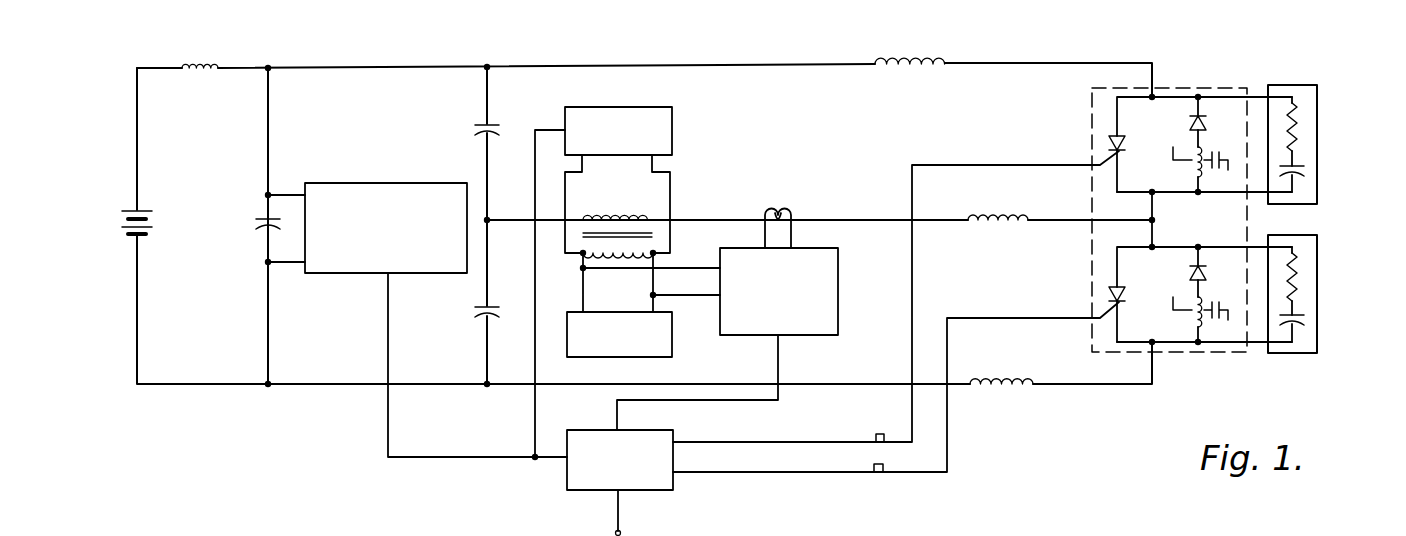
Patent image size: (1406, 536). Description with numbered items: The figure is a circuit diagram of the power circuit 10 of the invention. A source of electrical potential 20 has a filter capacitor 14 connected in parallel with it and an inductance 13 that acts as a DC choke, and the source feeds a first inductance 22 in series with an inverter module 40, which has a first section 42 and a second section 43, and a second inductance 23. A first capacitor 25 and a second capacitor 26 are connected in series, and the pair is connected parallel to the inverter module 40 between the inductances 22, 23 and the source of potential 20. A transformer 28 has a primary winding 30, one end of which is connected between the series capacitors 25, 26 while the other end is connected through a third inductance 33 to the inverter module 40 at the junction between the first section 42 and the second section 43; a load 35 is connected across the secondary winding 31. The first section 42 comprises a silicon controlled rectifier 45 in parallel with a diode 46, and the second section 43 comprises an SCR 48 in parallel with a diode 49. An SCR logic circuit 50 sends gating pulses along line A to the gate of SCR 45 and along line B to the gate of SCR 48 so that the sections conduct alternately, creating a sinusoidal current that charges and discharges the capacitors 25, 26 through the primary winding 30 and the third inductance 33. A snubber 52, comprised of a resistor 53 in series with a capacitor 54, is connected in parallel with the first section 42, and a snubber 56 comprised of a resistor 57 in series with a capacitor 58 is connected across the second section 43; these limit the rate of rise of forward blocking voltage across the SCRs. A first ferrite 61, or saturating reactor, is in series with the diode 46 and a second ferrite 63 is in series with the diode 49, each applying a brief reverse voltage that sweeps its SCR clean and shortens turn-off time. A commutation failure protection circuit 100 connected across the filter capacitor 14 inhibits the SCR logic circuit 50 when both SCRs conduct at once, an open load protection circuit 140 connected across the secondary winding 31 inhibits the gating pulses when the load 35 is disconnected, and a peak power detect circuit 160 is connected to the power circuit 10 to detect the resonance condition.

The power circuit 10 is at (1036, 392).
The inductance 13 is at (215, 60).
The filter capacitor 14 is at (262, 228).
The source of electrical potential 20 is at (128, 238).
The first inductance 22 is at (932, 56).
The second inductance 23 is at (1012, 394).
The first capacitor 25 is at (480, 126).
The second capacitor 26 is at (486, 316).
The transformer 28 is at (634, 228).
The primary winding 30 is at (608, 216).
The secondary winding 31 is at (626, 257).
The third inductance 33 is at (1000, 226).
The load 35 is at (664, 357).
The inverter module 40 is at (1256, 70).
The first section 42 is at (1156, 194).
The second section 43 is at (1178, 348).
The silicon controlled rectifier 45 is at (1108, 143).
The diode 46 is at (1190, 124).
The SCR 48 is at (1108, 297).
The diode 49 is at (1190, 274).
The SCR logic circuit 50 is at (662, 492).
The snubber 52 is at (1313, 144).
The resistor 53 is at (1298, 128).
The capacitor 54 is at (1300, 174).
The snubber 56 is at (1314, 294).
The resistor 57 is at (1300, 284).
The capacitor 58 is at (1300, 320).
The first ferrite 61 is at (1206, 170).
The second ferrite 63 is at (1192, 320).
The commutation failure protection circuit 100 is at (338, 277).
The open load protection circuit 140 is at (674, 133).
The peak power detect circuit 160 is at (840, 280).